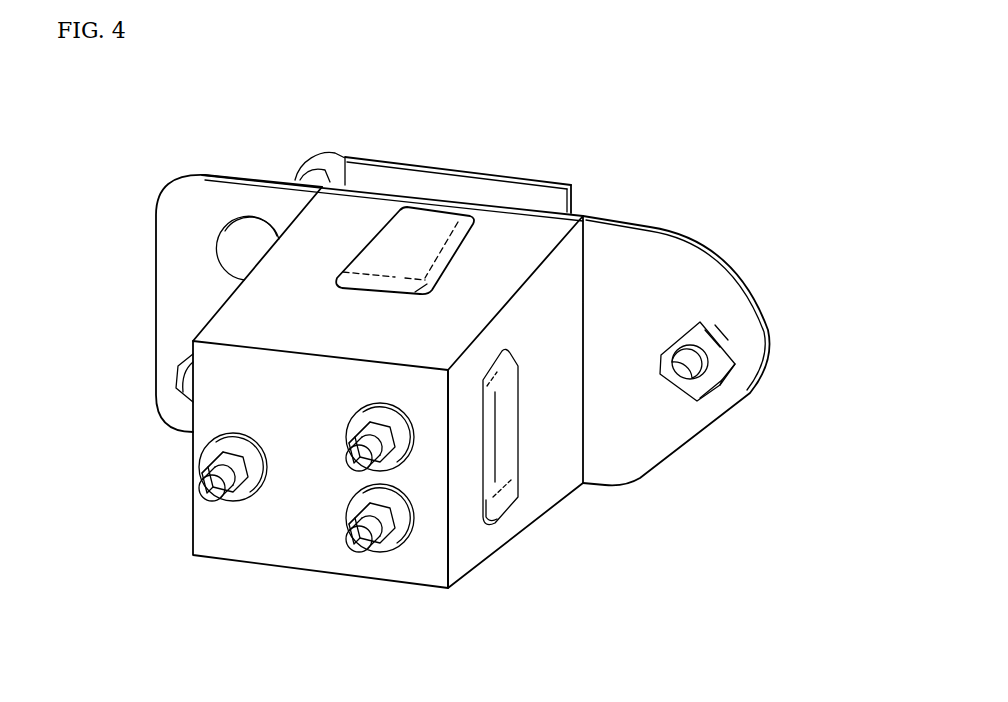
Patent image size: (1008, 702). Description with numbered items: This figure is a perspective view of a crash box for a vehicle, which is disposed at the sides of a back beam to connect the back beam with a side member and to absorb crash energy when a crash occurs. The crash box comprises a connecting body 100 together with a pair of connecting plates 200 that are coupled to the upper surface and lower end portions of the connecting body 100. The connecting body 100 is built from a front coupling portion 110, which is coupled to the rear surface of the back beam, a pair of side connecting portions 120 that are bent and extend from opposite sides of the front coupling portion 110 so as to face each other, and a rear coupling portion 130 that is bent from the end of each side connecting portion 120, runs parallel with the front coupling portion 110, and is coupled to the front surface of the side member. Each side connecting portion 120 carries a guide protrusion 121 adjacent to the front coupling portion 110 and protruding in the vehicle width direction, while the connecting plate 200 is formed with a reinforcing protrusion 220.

The connecting body 100 is at (503, 398).
The front coupling portion 110 is at (212, 528).
The side connecting portion 120 is at (540, 419).
The guide protrusion 121 is at (507, 482).
The rear coupling portion 130 is at (642, 258).
The connecting plate 200 is at (513, 232).
The reinforcing protrusion 220 is at (424, 222).